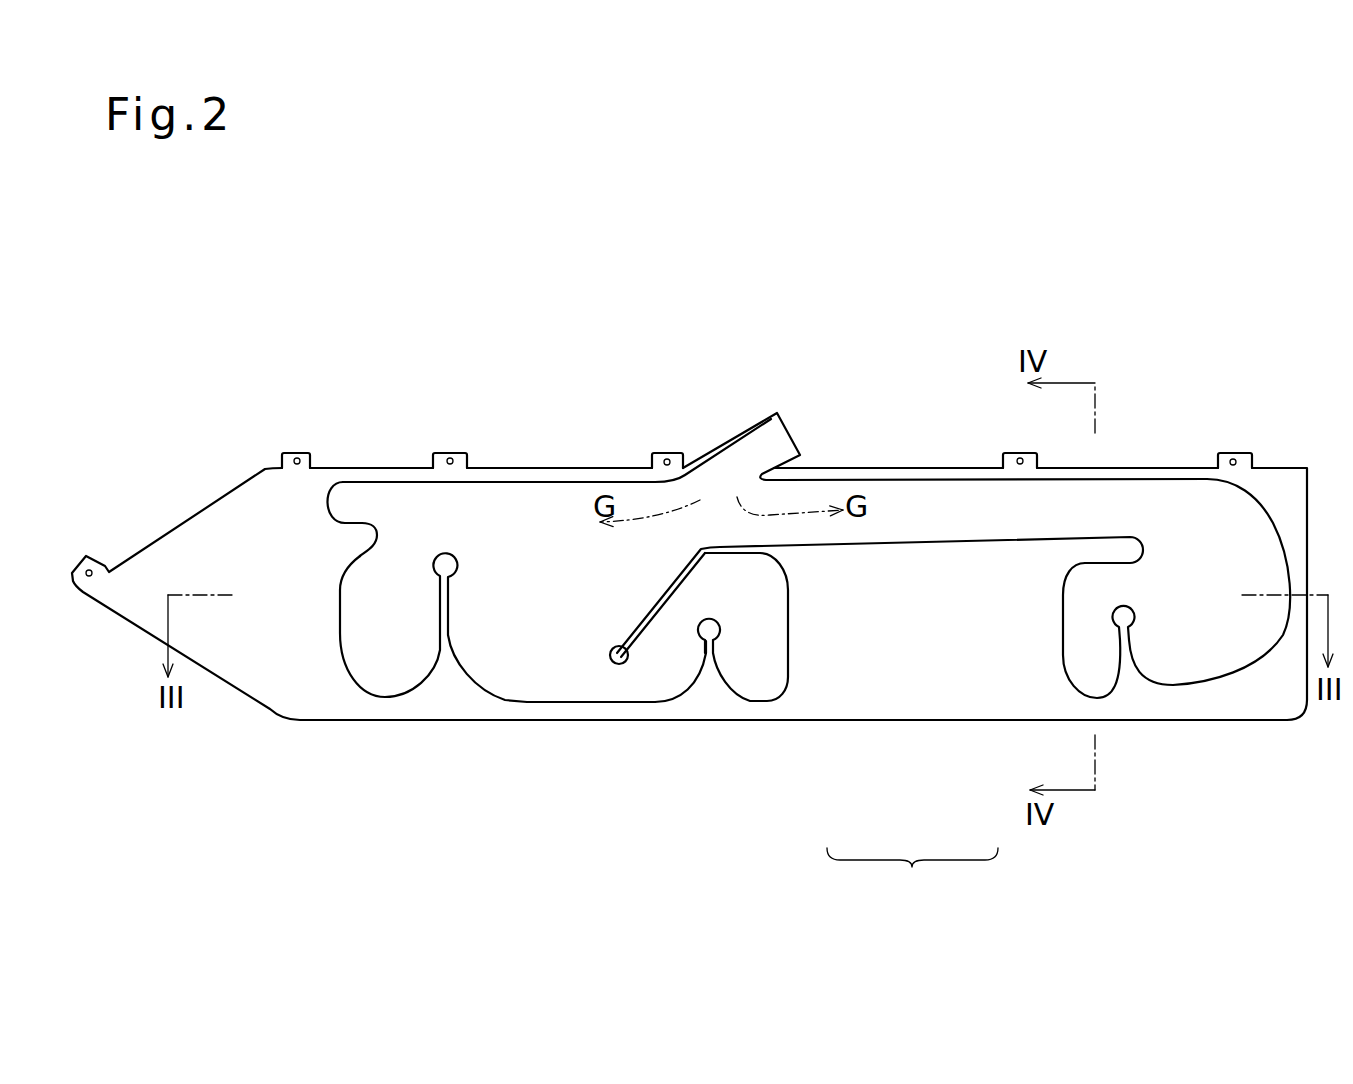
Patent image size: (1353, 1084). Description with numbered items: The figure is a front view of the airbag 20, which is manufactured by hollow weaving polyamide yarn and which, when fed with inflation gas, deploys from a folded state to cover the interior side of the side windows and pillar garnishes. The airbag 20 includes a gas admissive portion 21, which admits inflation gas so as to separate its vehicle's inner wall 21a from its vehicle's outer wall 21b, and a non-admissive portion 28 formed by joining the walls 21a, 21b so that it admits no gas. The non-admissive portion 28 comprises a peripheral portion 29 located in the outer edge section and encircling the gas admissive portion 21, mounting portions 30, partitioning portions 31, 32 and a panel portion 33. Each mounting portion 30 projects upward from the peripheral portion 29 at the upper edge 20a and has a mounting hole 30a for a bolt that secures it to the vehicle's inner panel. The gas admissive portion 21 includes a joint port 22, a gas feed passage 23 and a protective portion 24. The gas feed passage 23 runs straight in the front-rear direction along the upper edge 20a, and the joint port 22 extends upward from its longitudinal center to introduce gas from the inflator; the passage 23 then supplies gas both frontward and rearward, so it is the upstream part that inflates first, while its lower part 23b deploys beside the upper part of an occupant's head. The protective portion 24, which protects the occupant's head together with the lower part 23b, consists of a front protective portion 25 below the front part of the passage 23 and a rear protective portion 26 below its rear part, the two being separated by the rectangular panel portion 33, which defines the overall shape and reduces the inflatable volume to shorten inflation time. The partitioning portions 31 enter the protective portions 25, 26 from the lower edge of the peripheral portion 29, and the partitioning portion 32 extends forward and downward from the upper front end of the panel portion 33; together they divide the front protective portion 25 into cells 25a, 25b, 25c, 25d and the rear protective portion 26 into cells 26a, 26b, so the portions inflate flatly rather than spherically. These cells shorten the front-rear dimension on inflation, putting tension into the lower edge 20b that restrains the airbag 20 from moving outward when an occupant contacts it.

The airbag 20 is at (202, 333).
The upper edge 20a is at (565, 488).
The lower edge 20b is at (583, 710).
The gas admissive portion 21 is at (362, 648).
The vehicle's inner wall 21a is at (380, 683).
The vehicle's outer wall 21b is at (372, 667).
The joint port 22 is at (763, 443).
The gas feed passage 23 is at (920, 495).
The lower part of the gas feed passage 23b is at (942, 532).
The protective portion 24 is at (912, 880).
The front protective portion 25 is at (798, 677).
The cell 25a is at (417, 673).
The cell 25b is at (520, 657).
The cell 25c is at (668, 660).
The cell 25d is at (757, 657).
The rear protective portion 26 is at (1047, 662).
The cell 26a is at (1105, 680).
The cell 26b is at (1215, 647).
The non-admissive portion 28 is at (373, 460).
The peripheral portion 29 is at (401, 478).
The mounting portion 30 is at (287, 456).
The mounting hole 30a is at (297, 455).
The partitioning portion 31 is at (448, 622).
The partitioning portion 32 is at (630, 617).
The panel portion 33 is at (915, 683).